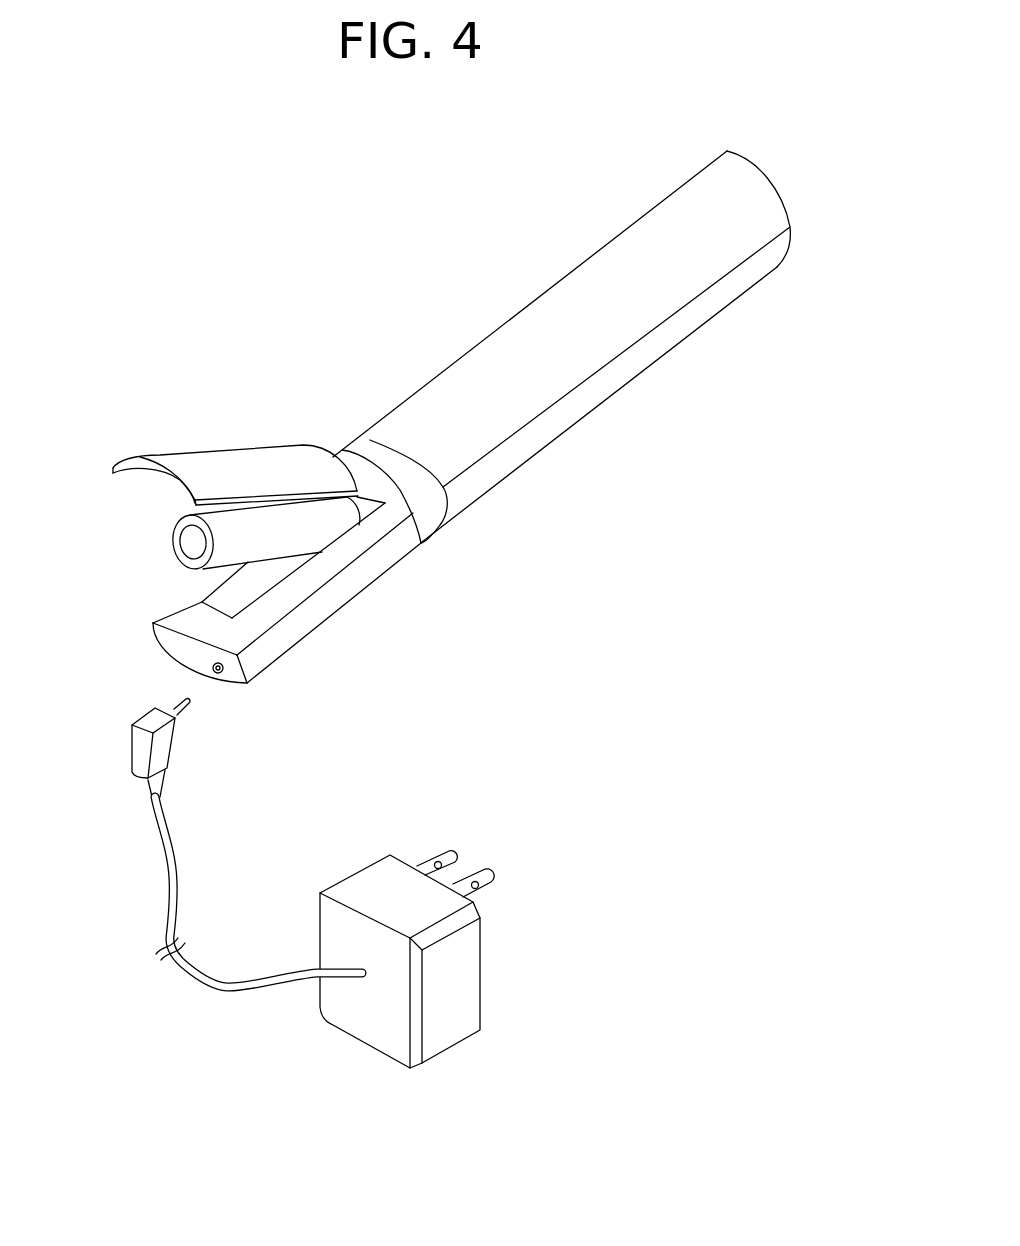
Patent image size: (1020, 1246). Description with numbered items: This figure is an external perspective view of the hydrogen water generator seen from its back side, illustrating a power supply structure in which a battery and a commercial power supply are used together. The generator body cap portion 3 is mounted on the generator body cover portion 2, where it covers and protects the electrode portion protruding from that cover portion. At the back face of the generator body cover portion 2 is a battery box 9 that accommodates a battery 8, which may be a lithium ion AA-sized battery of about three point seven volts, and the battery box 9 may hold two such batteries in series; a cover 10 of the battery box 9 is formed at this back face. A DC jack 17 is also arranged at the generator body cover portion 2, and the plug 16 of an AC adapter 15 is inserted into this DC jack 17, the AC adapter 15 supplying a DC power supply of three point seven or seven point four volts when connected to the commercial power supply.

The generator body cover portion 2 is at (283, 658).
The generator body cap portion 3 is at (678, 225).
The battery 8 is at (173, 541).
The battery box 9 is at (222, 602).
The cover 10 is at (239, 448).
The AC adapter 15 is at (472, 987).
The plug 16 is at (132, 745).
The DC jack 17 is at (218, 673).